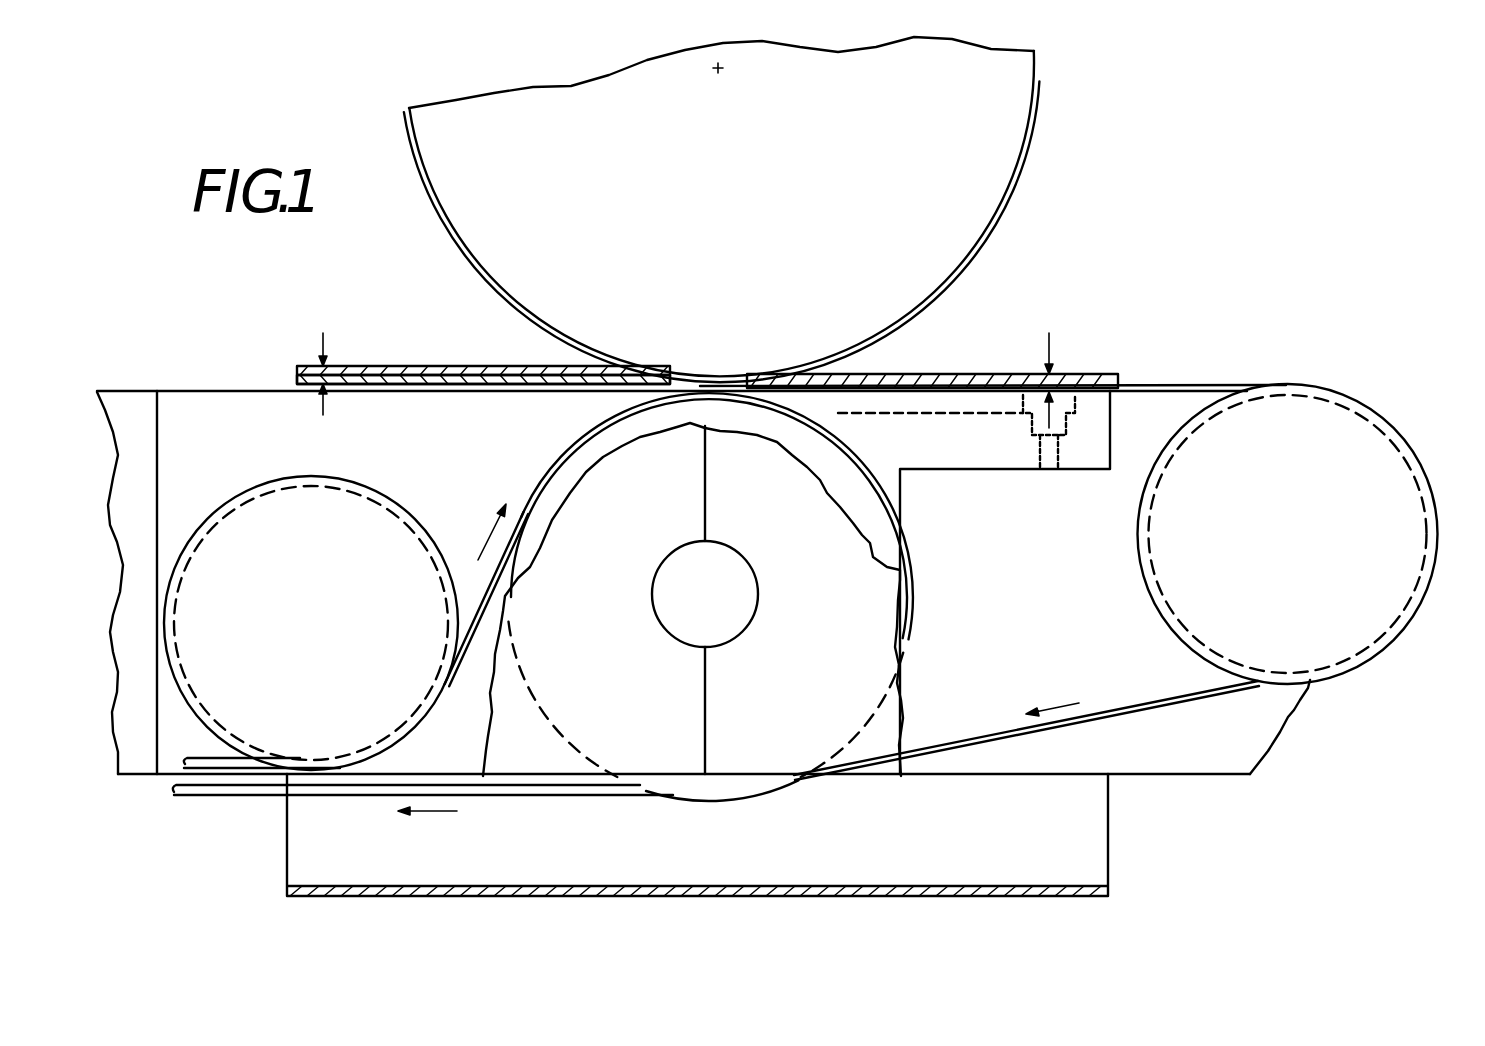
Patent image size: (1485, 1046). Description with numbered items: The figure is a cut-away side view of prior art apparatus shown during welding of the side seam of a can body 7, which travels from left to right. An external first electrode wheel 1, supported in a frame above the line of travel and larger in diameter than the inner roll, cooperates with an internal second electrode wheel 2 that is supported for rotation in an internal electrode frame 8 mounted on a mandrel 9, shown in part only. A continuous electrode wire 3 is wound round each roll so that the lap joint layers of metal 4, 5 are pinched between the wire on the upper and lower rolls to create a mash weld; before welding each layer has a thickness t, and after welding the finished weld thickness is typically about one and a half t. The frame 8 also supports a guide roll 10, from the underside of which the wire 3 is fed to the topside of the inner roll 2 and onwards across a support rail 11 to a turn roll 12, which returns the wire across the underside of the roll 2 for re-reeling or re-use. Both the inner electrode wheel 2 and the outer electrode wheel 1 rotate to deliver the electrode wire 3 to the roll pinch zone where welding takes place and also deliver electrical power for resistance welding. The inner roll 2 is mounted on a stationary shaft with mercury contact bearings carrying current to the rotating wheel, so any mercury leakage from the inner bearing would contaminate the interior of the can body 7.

The first electrode wheel 1 is at (1008, 78).
The second electrode wheel 2 is at (836, 469).
The electrode wire 3 is at (1015, 198).
The layer of metal 4 is at (411, 366).
The layer of metal 5 is at (430, 384).
The can body 7 is at (960, 374).
The internal electrode frame 8 is at (197, 414).
The mandrel 9 is at (124, 410).
The guide roll 10 is at (241, 530).
The support rail 11 is at (977, 405).
The turn roll 12 is at (1312, 422).